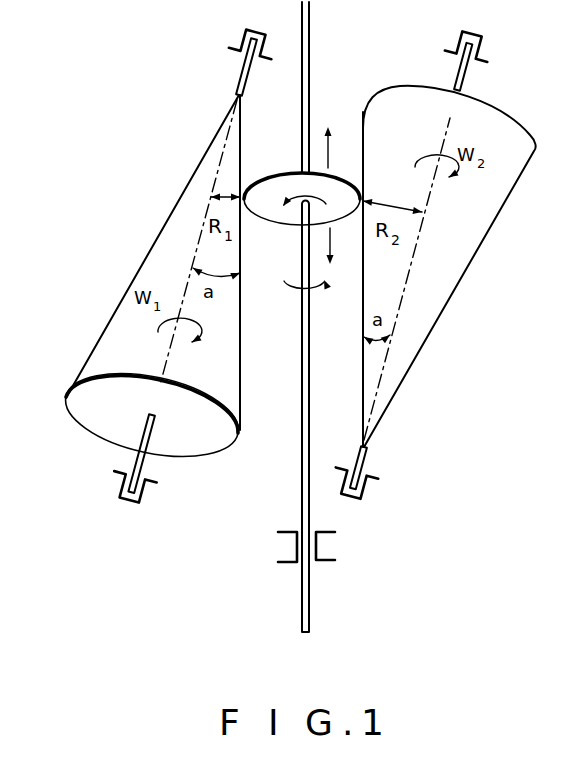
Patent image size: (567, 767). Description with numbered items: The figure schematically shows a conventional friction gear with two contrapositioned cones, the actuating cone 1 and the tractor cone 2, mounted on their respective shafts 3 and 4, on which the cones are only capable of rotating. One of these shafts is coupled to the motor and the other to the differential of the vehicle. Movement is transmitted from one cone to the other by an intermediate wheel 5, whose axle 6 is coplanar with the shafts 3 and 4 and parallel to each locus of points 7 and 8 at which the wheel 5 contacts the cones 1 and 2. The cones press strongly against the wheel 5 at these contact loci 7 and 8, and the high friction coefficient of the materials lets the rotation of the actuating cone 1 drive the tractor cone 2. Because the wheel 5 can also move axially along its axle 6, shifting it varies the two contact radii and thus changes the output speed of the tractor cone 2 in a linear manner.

The actuating cone 1 is at (120, 357).
The tractor cone 2 is at (465, 256).
The shaft 3 is at (200, 225).
The shaft 4 is at (405, 293).
The intermediate wheel 5 is at (277, 190).
The axle 6 is at (308, 105).
The locus of points of contact 7 is at (242, 353).
The locus of points of contact 8 is at (361, 298).